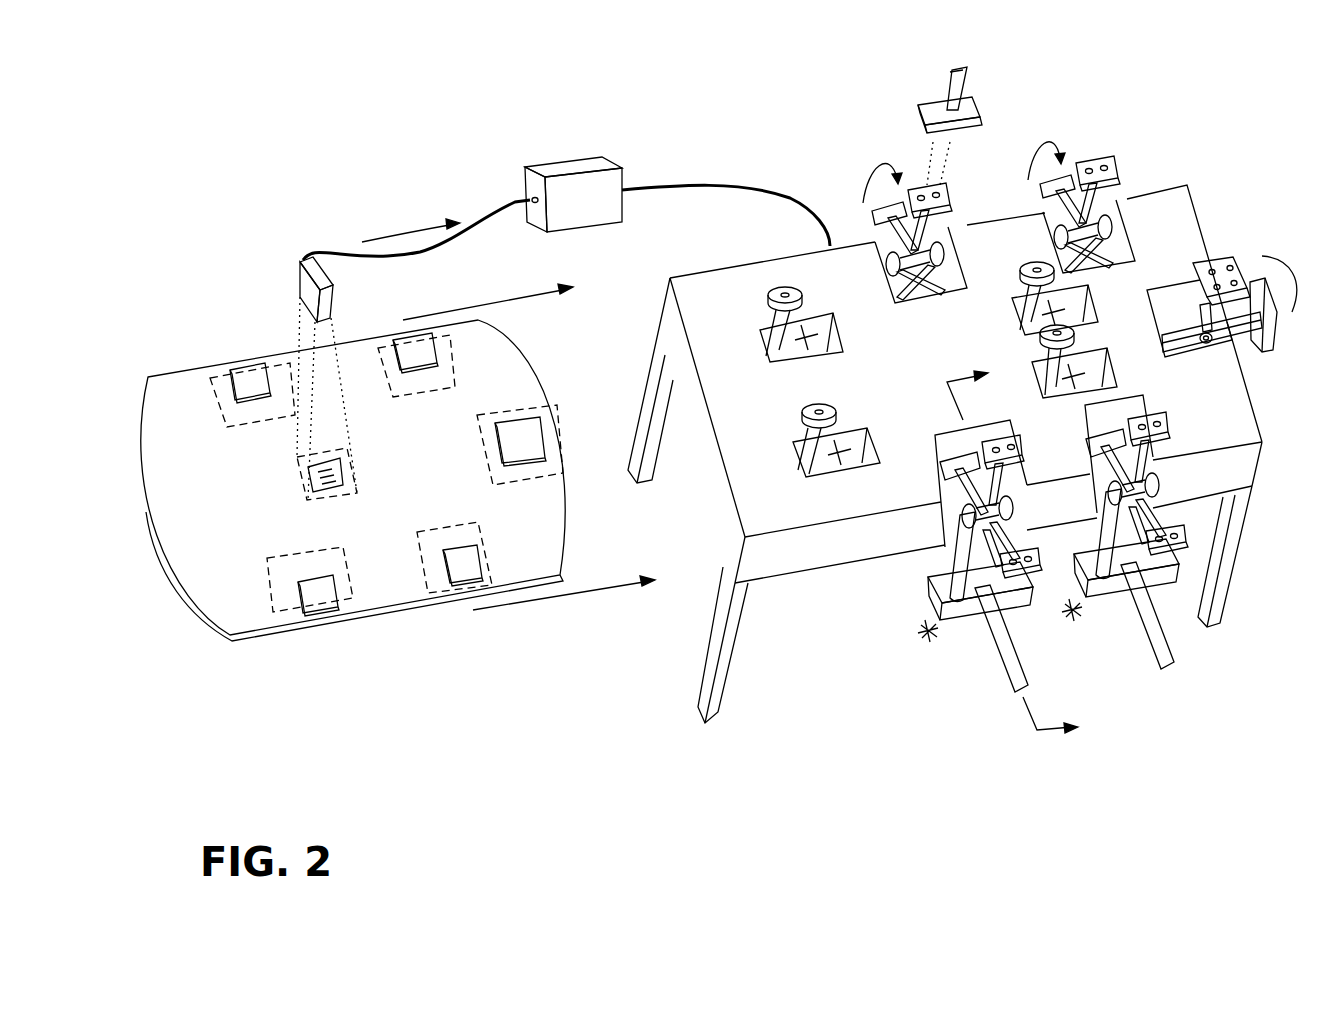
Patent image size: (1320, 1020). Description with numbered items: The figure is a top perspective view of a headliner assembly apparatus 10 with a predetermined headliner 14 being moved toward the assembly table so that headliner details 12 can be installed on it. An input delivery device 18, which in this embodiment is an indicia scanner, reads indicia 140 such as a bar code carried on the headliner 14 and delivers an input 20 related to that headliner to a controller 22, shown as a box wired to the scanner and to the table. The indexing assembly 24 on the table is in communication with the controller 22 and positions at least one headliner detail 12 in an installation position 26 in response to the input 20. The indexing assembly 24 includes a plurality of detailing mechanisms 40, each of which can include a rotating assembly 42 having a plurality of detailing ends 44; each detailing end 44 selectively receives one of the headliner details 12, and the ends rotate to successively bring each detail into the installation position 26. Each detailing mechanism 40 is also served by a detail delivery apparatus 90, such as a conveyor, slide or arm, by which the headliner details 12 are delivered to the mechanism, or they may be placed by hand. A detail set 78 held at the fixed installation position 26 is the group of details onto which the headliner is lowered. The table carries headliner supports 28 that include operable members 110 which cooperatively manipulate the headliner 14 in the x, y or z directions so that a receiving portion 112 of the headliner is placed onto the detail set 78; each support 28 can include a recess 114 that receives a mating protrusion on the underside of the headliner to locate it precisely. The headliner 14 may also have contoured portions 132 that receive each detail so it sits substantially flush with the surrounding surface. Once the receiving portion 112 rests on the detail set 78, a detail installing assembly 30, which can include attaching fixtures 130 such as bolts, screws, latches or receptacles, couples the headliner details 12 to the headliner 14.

The headliner assembly apparatus 10 is at (391, 101).
The headliner detail 12 is at (1230, 306).
The predetermined headliner 14 is at (187, 362).
The input delivery device 18 is at (296, 286).
The input 20 is at (390, 243).
The controller 22 is at (565, 185).
The indexing assembly 24 is at (1106, 143).
The installation position 26 is at (964, 193).
The headliner support 28 is at (822, 446).
The detail installing assembly 30 is at (947, 121).
The detailing mechanism 40 is at (1189, 557).
The rotating assembly 42 is at (1225, 345).
The detailing end 44 is at (1216, 473).
The detail set 78 is at (1241, 245).
The detail delivery apparatus 90 is at (1002, 643).
The operable member 110 is at (767, 318).
The receiving portion 112 is at (288, 582).
The recess 114 is at (805, 411).
The attaching fixture 130 is at (977, 128).
The contoured portion 132 is at (530, 440).
The indicia 140 is at (330, 478).